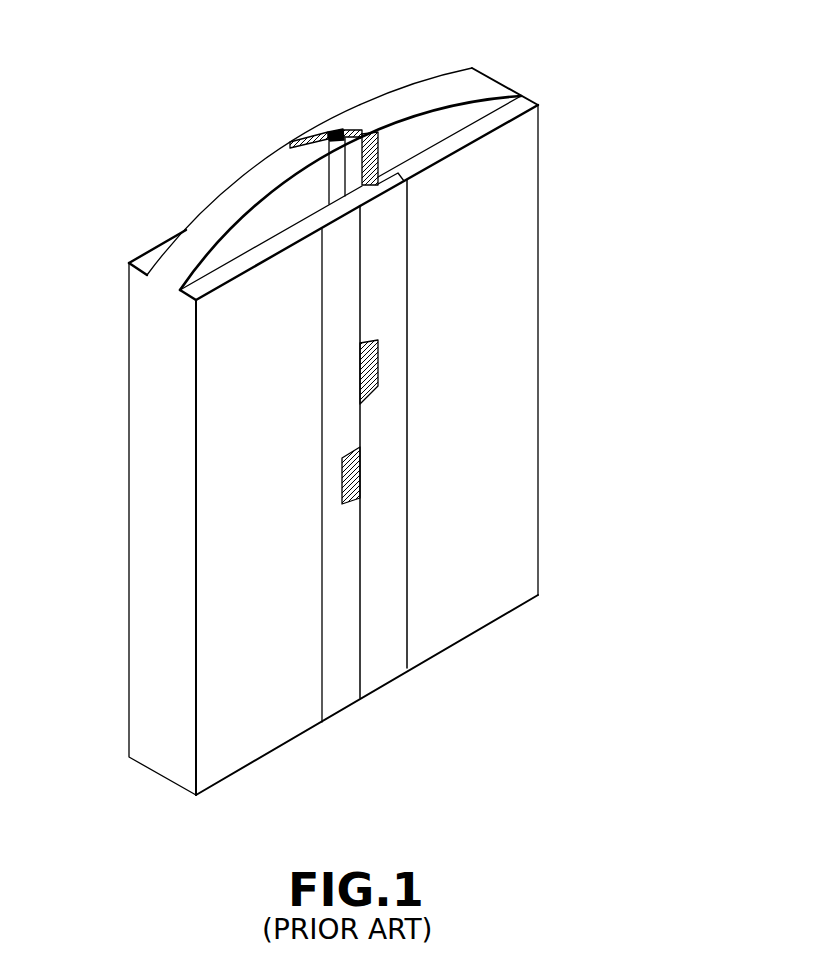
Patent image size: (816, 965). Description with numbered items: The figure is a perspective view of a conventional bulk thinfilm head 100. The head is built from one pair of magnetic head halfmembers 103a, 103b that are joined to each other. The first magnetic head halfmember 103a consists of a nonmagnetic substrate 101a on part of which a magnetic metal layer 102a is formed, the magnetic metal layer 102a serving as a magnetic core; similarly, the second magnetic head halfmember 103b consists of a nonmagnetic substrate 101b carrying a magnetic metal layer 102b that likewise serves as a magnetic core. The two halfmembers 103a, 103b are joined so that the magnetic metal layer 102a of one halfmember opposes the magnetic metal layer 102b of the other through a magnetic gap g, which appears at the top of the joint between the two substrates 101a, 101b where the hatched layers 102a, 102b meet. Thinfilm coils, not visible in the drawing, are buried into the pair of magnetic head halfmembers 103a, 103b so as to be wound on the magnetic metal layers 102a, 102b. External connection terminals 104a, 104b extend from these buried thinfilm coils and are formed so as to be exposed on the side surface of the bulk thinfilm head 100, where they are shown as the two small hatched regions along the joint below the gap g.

The bulk thinfilm head 100 is at (340, 407).
The nonmagnetic substrate 101a is at (237, 203).
The nonmagnetic substrate 101b is at (433, 92).
The magnetic metal layer 102a is at (303, 139).
The magnetic metal layer 102b is at (365, 129).
The magnetic gap g is at (343, 129).
The magnetic head halfmember 103a is at (132, 454).
The magnetic head halfmember 103b is at (528, 292).
The external connection terminal 104a is at (360, 474).
The external connection terminal 104b is at (378, 386).